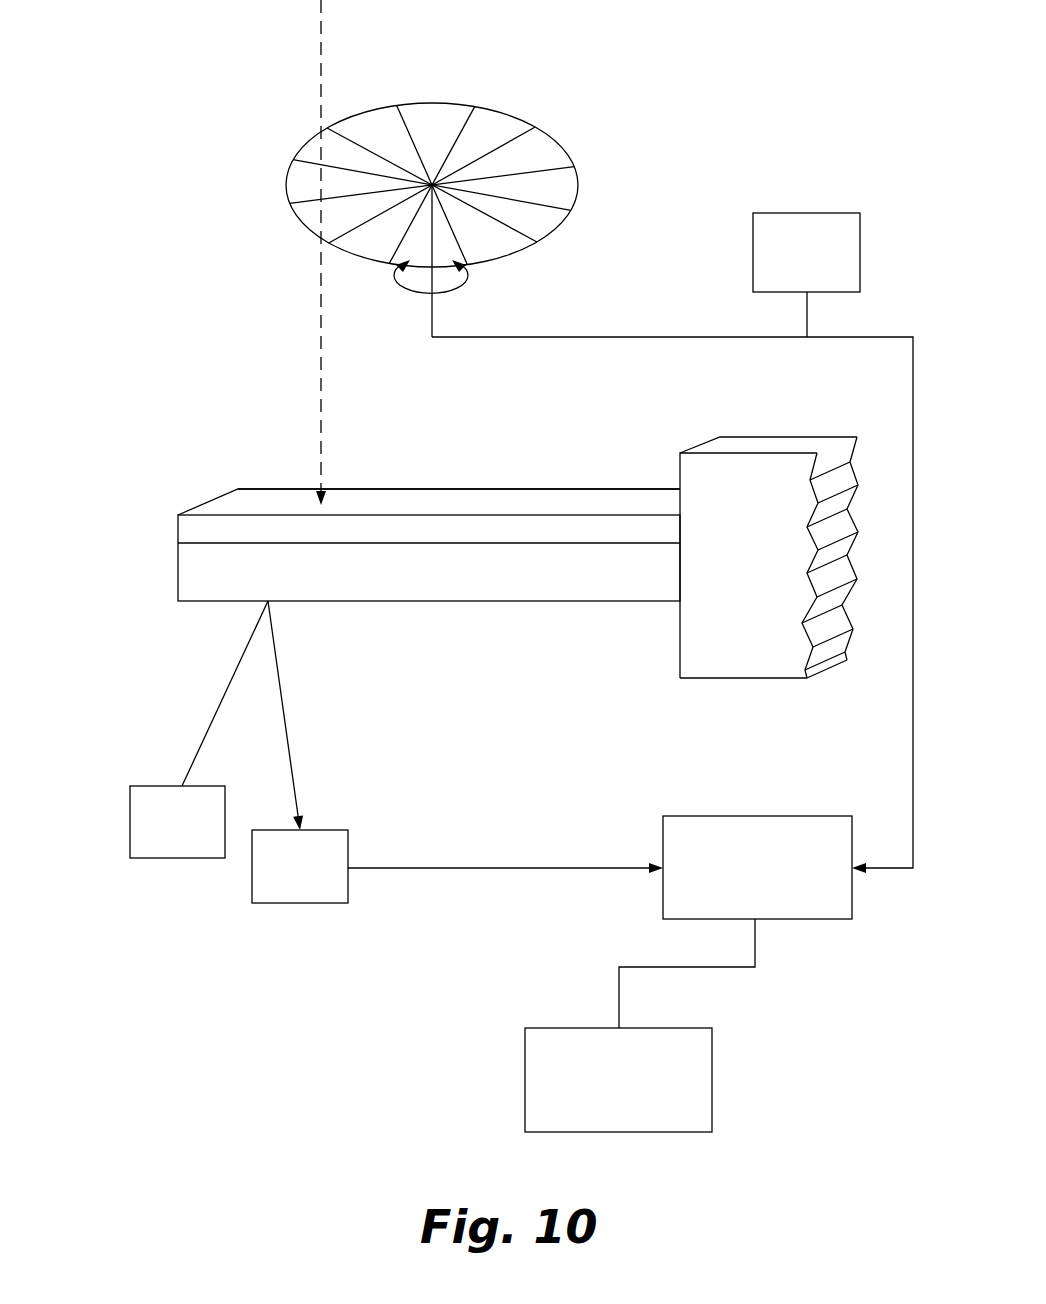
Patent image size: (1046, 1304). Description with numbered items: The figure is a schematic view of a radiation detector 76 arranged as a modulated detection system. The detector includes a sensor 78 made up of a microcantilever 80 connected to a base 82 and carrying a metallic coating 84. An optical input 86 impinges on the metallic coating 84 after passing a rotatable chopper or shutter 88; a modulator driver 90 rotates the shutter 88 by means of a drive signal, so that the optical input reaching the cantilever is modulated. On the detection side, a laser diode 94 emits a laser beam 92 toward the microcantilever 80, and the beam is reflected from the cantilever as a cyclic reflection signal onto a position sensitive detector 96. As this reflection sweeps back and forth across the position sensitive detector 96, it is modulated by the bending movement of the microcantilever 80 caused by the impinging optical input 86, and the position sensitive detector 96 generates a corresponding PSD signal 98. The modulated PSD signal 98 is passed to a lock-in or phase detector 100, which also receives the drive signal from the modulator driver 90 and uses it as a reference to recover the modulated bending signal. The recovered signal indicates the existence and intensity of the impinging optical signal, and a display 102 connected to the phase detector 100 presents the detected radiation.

The radiation detector 76 is at (747, 108).
The sensor 78 is at (133, 504).
The microcantilever 80 is at (440, 612).
The base 82 is at (767, 443).
The metallic coating 84 is at (488, 505).
The optical input 86 is at (318, 70).
The rotatable chopper or shutter 88 is at (513, 115).
The modulator driver 90 is at (832, 213).
The laser beam 92 is at (218, 702).
The laser diode 94 is at (130, 812).
The position sensitive detector 96 is at (302, 903).
The PSD signal 98 is at (520, 866).
The phase detector 100 is at (797, 920).
The display 102 is at (523, 1057).